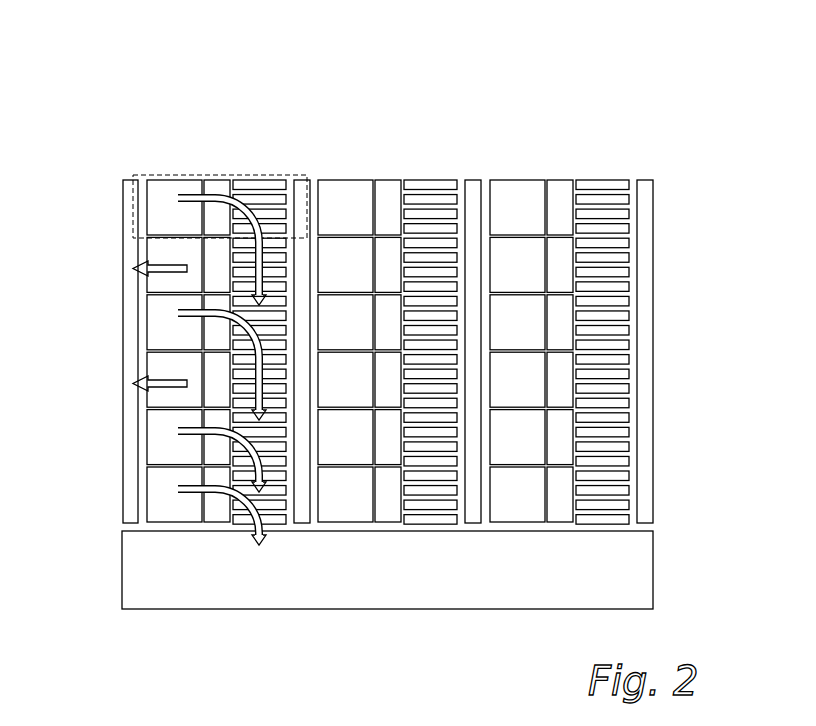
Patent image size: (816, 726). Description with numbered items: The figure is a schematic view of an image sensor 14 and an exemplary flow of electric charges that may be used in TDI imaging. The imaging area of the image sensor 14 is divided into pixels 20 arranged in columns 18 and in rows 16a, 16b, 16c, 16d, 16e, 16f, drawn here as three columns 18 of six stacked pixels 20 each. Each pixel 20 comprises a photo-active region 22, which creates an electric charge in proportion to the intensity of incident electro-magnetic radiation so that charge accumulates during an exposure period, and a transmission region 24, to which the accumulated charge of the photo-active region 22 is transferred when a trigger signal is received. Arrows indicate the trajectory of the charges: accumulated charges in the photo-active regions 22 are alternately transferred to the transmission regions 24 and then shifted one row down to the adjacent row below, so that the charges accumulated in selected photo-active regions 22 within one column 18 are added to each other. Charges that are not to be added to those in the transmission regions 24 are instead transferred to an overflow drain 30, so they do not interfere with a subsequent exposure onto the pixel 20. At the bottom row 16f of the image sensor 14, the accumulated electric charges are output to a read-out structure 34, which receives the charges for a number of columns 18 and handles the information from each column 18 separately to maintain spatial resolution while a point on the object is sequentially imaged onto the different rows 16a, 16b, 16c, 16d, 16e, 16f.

The image sensor 14 is at (82, 60).
The row 16a is at (176, 221).
The row 16b is at (143, 281).
The row 16c is at (143, 336).
The row 16d is at (145, 396).
The row 16e is at (147, 448).
The bottom row 16f is at (150, 501).
The column 18 is at (349, 293).
The pixel 20 is at (143, 176).
The photo-active region 22 is at (158, 211).
The transmission region 24 is at (238, 185).
The overflow drain 30 is at (474, 180).
The read-out structure 34 is at (651, 556).